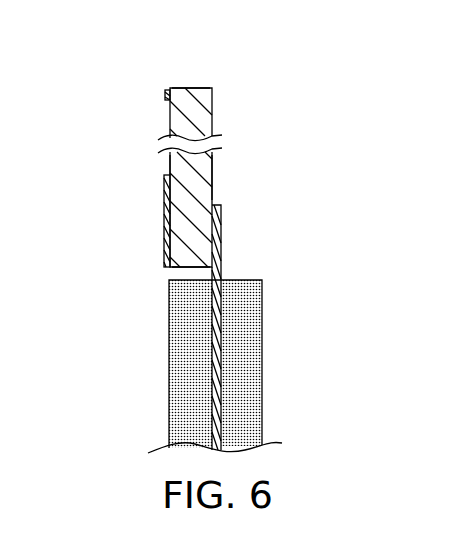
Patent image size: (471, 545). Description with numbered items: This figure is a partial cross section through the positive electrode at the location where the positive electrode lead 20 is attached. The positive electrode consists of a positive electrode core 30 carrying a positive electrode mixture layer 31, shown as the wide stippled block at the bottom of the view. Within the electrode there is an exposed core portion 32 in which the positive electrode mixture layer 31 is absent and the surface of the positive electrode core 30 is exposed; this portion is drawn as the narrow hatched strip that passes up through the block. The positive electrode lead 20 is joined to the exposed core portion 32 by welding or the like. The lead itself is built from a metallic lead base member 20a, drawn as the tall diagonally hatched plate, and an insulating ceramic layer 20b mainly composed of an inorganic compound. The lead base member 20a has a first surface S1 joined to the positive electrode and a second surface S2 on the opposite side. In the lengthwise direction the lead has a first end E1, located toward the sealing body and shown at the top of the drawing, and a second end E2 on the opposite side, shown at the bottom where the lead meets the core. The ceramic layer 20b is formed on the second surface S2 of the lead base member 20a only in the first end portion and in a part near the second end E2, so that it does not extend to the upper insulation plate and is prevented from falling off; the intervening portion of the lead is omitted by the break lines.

The positive electrode lead 20 is at (214, 122).
The lead base member 20a is at (205, 186).
The ceramic layer 20b is at (166, 96).
The exposed core portion 32 is at (222, 222).
The positive electrode core 30 is at (209, 366).
The positive electrode mixture layer 31 is at (178, 403).
The first end E1 is at (192, 87).
The second end E2 is at (172, 267).
The first surface S1 is at (214, 167).
The second surface S2 is at (168, 168).